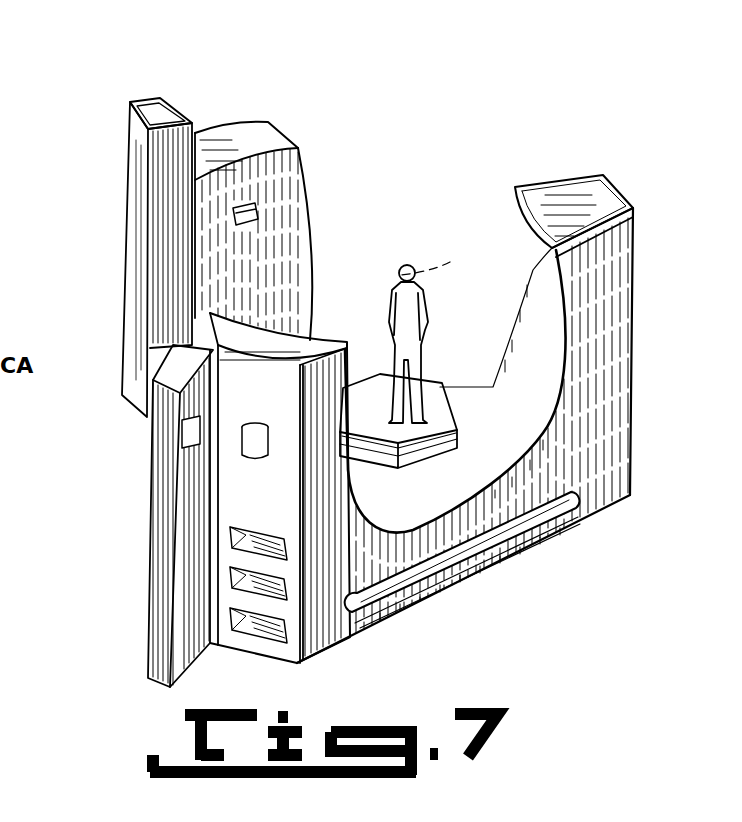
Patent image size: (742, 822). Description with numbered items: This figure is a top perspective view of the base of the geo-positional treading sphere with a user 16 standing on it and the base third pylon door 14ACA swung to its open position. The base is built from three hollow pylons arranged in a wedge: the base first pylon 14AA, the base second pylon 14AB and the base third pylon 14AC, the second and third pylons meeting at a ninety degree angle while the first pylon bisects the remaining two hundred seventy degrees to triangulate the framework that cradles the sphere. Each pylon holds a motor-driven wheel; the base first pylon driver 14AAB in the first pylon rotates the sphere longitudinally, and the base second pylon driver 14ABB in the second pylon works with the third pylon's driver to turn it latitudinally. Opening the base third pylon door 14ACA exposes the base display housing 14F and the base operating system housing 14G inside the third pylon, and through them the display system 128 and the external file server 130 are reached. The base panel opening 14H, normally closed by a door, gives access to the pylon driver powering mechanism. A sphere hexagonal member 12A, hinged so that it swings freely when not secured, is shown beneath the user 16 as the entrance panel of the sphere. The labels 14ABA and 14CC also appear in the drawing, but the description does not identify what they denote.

The rear left post 14ABA is at (153, 108).
The base second pylon 14AB is at (280, 124).
The base second pylon driver 14ABB is at (252, 214).
The base third pylon 14AC is at (333, 341).
The base third pylon door 14ACA is at (143, 436).
The display system 128 is at (250, 446).
The base display housing 14F is at (240, 432).
The base operating system housing 14G is at (237, 543).
The external file server 130 is at (267, 630).
The concave base front 14CC is at (410, 535).
The base first pylon 14AA is at (582, 193).
The base first pylon driver 14AAB is at (546, 278).
The user 16 is at (450, 262).
The sphere hexagonal member 12A is at (462, 391).
The base panel opening 14H is at (480, 545).